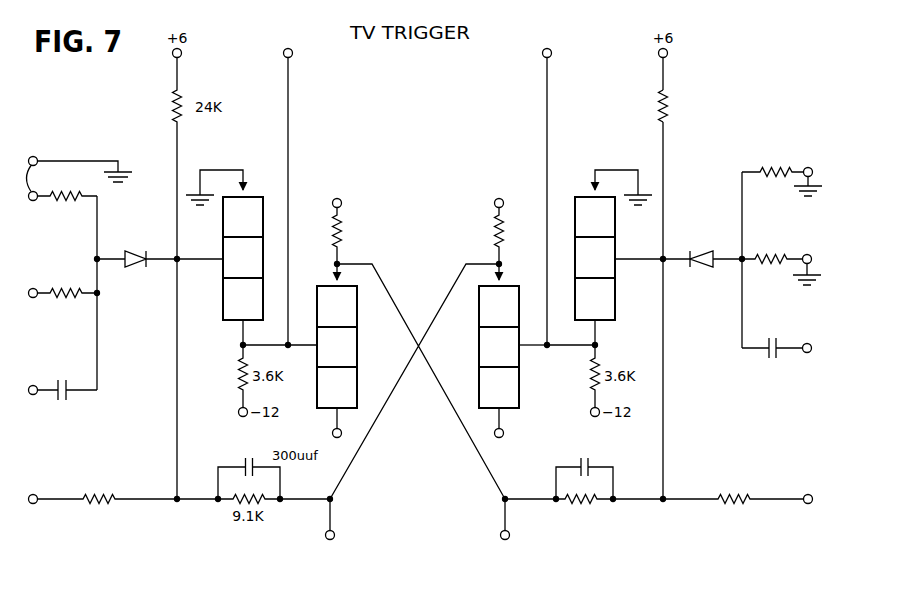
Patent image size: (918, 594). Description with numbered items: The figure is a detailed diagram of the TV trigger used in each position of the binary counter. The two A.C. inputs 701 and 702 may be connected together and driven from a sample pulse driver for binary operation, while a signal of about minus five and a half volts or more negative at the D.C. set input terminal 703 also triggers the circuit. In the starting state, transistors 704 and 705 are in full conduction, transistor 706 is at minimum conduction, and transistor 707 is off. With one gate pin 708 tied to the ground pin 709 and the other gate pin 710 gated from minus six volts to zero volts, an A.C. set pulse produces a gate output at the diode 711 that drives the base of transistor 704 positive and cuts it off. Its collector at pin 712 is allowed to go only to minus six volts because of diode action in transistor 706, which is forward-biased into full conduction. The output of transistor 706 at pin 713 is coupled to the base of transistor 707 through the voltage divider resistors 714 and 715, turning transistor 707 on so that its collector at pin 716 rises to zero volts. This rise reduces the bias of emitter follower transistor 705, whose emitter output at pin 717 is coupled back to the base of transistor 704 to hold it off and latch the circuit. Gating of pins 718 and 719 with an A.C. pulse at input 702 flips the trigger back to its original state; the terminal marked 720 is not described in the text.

The A.C. input 701 is at (36, 386).
The A.C. input 702 is at (803, 344).
The D.C. set input terminal 703 is at (805, 495).
The transistor 704 is at (222, 303).
The transistor 705 is at (478, 345).
The emitter follower transistor 706 is at (358, 345).
The transistor 707 is at (616, 300).
The gate pin 708 is at (37, 200).
The ground pin 709 is at (37, 158).
The gate pin 710 is at (36, 297).
The diode 711 is at (138, 268).
The pin 712 is at (292, 56).
The pin 713 is at (501, 532).
The voltage divider resistor 714 is at (601, 503).
The voltage divider resistor 715 is at (658, 98).
The pin 716 is at (543, 56).
The pin 717 is at (334, 532).
The gate pin 718 is at (803, 176).
The gate pin 719 is at (803, 263).
The resistor (9.1K) from terminal A 720 is at (36, 503).